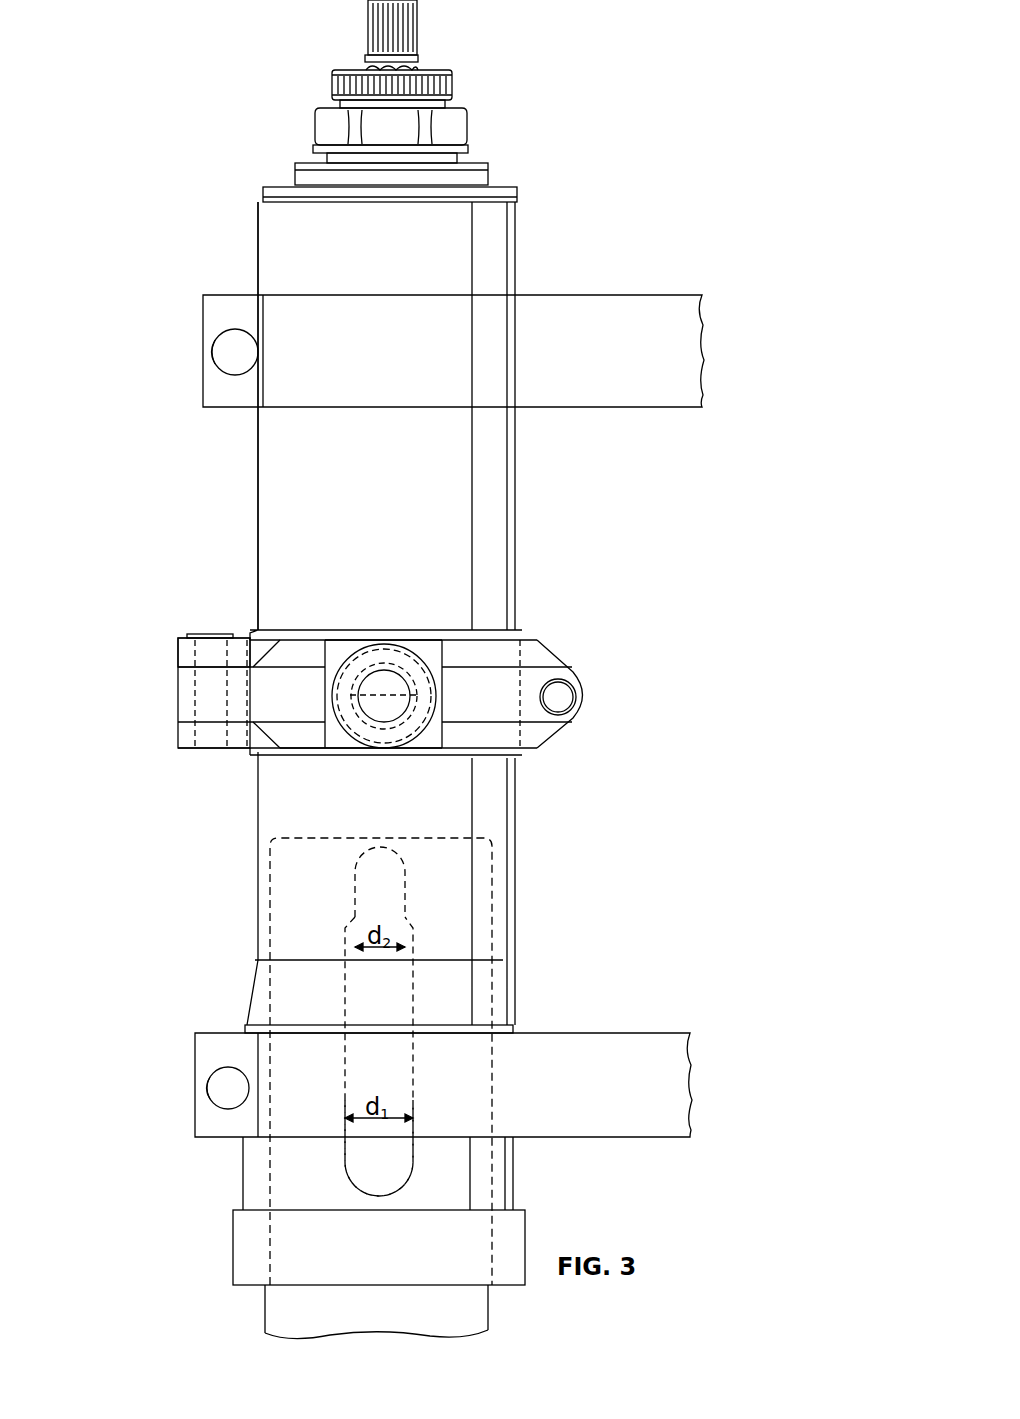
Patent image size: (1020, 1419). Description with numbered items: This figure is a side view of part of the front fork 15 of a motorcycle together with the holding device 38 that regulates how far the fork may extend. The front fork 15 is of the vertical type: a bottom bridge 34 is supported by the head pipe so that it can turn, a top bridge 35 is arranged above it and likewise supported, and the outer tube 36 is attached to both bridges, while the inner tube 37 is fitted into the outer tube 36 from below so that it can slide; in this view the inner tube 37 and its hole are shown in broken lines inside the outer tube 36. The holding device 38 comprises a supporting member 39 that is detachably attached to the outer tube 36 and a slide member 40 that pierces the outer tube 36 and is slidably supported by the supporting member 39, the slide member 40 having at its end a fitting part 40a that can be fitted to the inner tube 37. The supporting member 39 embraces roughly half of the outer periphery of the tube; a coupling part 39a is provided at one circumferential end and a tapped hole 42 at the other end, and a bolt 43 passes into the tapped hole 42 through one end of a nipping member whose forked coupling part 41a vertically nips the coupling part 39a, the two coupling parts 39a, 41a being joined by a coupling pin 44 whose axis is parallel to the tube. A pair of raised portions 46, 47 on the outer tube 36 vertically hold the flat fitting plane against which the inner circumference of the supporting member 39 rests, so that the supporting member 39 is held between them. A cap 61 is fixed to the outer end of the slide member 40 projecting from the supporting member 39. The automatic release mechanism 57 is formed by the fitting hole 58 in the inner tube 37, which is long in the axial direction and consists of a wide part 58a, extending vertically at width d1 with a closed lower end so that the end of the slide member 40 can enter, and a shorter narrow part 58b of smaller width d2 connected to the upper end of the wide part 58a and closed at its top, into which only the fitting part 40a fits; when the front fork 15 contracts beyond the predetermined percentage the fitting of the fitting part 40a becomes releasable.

The front fork 15 is at (255, 805).
The bottom bridge 34 is at (604, 1105).
The top bridge 35 is at (570, 300).
The outer tube 36 is at (273, 524).
The inner tube 37 is at (270, 1000).
The holding device 38 is at (375, 678).
The supporting member 39 is at (490, 683).
The coupling part 39a is at (178, 698).
The slide member 40 is at (387, 735).
The fitting part 40a is at (398, 650).
The forked coupling part 41a is at (183, 657).
The tapped hole 42 is at (530, 637).
The bolt 43 is at (567, 702).
The coupling pin 44 is at (213, 638).
The raised portion 46 is at (338, 630).
The raised portion 47 is at (288, 752).
The automatic release mechanism 57 is at (343, 1092).
The fitting hole 58 is at (433, 1027).
The wide part 58a is at (410, 972).
The narrow part 58b is at (405, 885).
The cap 61 is at (383, 648).